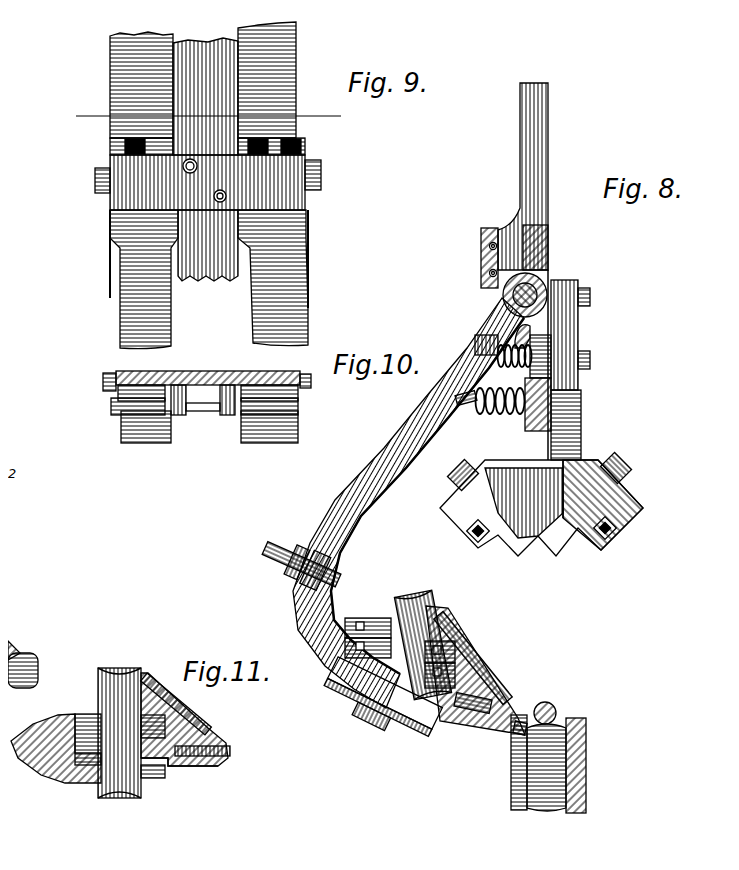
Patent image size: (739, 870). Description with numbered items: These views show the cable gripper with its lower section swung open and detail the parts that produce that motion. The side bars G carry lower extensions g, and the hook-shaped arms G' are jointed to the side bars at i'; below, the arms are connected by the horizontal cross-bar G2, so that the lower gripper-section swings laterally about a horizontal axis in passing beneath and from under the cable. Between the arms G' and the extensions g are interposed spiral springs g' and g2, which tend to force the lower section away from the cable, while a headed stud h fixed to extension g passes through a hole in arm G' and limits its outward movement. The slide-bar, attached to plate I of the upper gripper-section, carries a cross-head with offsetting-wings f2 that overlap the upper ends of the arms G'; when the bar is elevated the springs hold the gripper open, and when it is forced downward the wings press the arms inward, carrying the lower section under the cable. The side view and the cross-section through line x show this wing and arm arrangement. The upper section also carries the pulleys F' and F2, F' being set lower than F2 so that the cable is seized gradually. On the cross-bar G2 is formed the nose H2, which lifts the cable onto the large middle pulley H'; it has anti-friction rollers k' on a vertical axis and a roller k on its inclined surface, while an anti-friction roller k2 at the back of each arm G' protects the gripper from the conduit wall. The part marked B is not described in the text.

In FIG. 9, the hook-shaped arm G' is at (207, 185).
In FIG. 10, the hook-shaped arm G' is at (210, 439).
In FIG. 8, the hook-shaped arm G' is at (420, 490).
In FIG. 11, the hook-shaped arm G' is at (56, 742).
In FIG. 9, the pulley of upper gripper-section F' is at (205, 159).
In FIG. 10, the pulley of upper gripper-section F' is at (207, 370).
In FIG. 8, the pulley of upper gripper-section F' is at (508, 287).
In FIG. 9, the joint i' is at (199, 147).
In FIG. 8, the joint i' is at (570, 360).
In FIG. 9, the offsetting-wing f2 is at (306, 191).
In FIG. 10, the offsetting-wing f2 is at (223, 407).
In FIG. 8, the offsetting-wing f2 is at (473, 250).
In FIG. 9, the lower extension g is at (205, 259).
In FIG. 9, the section line x is at (208, 113).
In FIG. 10, the side bar G is at (208, 377).
In FIG. 8, the side bar G is at (544, 247).
In FIG. 10, the clamp piece i is at (203, 408).
In FIG. 8, the plate I is at (550, 375).
In FIG. 8, the headed stud h is at (470, 348).
In FIG. 8, the spiral spring g' is at (525, 387).
In FIG. 8, the spiral spring g2 is at (489, 413).
In FIG. 8, the pulley of upper gripper-section F2 is at (600, 450).
In FIG. 8, the anti-friction roller k2 is at (258, 551).
In FIG. 8, the cross-bar G2 is at (386, 683).
In FIG. 8, the middle pulley H' is at (422, 636).
In FIG. 11, the middle pulley H' is at (119, 722).
In FIG. 8, the nose H2 is at (440, 713).
In FIG. 11, the nose H2 is at (160, 758).
In FIG. 8, the roller k is at (473, 657).
In FIG. 11, the roller k is at (184, 725).
In FIG. 8, the anti-friction roller k' is at (509, 745).
In FIG. 11, the anti-friction roller k' is at (212, 755).
In FIG. 8, the wire / bar B is at (544, 697).